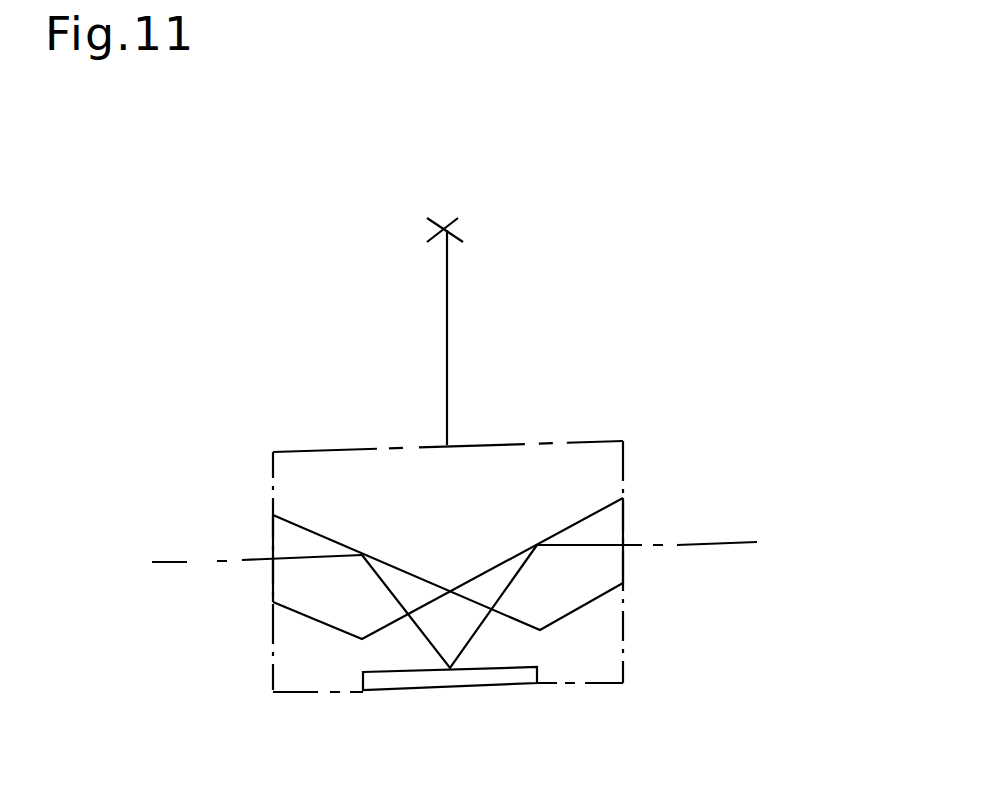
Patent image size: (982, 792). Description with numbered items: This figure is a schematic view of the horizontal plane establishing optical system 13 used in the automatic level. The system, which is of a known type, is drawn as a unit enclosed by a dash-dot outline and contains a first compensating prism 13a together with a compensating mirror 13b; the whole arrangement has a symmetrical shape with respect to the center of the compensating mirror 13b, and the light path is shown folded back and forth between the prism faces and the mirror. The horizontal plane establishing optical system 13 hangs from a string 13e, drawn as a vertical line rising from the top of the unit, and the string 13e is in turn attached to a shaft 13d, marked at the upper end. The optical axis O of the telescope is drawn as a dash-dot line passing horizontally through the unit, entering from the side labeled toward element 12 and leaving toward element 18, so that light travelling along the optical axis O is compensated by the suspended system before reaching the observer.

The horizontal plane establishing optical system 13 is at (272, 436).
The first compensating prism 13a is at (283, 573).
The compensating mirror 13b is at (493, 678).
The shaft 13d is at (444, 228).
The string 13e is at (447, 358).
The optical axis O is at (183, 560).
The component 12 (to 12) 12 is at (130, 563).
The component 18 (to 18) 18 is at (790, 540).